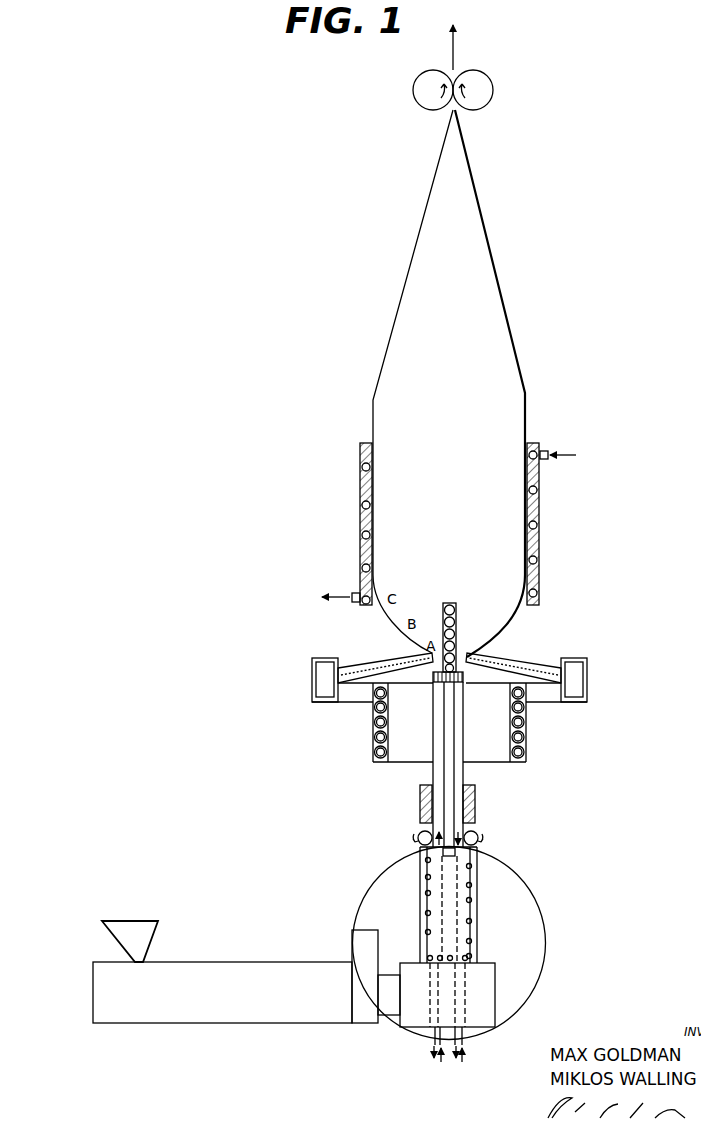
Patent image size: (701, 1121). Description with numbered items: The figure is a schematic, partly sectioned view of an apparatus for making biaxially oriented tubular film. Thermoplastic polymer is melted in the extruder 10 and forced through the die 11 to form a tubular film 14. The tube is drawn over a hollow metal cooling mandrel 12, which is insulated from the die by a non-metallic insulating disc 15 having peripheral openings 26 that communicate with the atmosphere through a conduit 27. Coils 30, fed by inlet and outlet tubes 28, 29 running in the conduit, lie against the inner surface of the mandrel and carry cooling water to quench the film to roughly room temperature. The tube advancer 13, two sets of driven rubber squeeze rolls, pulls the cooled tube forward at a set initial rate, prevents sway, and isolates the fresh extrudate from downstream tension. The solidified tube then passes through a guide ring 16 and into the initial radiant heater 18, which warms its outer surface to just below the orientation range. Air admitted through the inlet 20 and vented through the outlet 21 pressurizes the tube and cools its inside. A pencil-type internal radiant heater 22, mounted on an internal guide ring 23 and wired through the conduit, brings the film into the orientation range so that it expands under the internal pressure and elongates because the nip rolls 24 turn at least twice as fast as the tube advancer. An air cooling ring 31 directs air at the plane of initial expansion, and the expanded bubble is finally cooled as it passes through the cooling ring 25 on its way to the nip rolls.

The extruder 10 is at (242, 998).
The die 11 is at (496, 990).
The cooling mandrel 12 is at (421, 908).
The tube advancer 13 is at (481, 836).
The tubular film 14 is at (421, 884).
The insulating disc 15 is at (471, 945).
The guide ring 16 is at (476, 799).
The initial radiant heater 18 is at (527, 712).
The inlet 20 is at (436, 1063).
The outlet 21 is at (452, 1066).
The internal radiant heater 22 is at (456, 606).
The internal guide ring 23 is at (464, 683).
The nip rolls 24 is at (493, 93).
The cooling ring 25 is at (540, 522).
The openings 26 is at (478, 951).
The conduit 27 is at (468, 982).
The inlet tube 28 is at (463, 1042).
The outlet tube 29 is at (430, 1042).
The coils 30 is at (472, 897).
The air cooling ring 31 is at (515, 663).